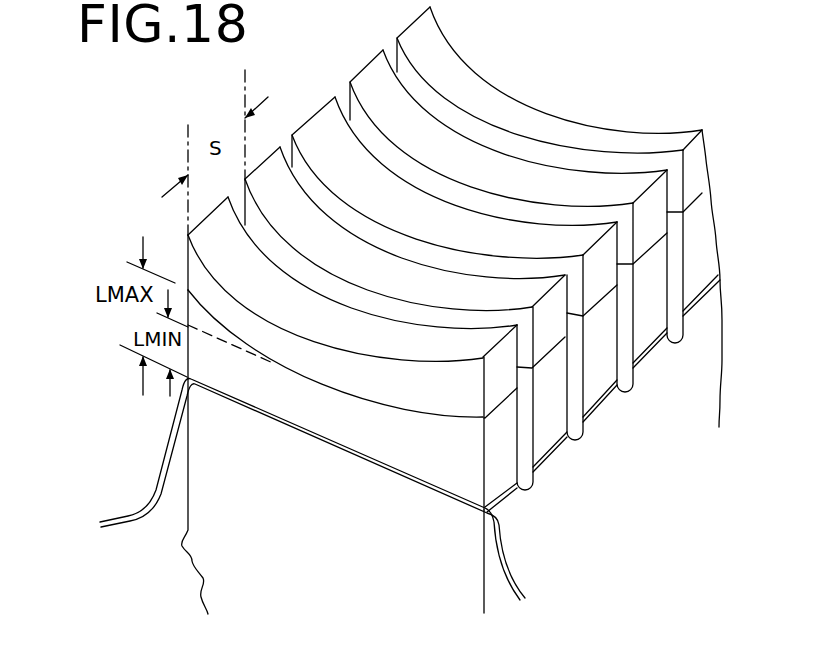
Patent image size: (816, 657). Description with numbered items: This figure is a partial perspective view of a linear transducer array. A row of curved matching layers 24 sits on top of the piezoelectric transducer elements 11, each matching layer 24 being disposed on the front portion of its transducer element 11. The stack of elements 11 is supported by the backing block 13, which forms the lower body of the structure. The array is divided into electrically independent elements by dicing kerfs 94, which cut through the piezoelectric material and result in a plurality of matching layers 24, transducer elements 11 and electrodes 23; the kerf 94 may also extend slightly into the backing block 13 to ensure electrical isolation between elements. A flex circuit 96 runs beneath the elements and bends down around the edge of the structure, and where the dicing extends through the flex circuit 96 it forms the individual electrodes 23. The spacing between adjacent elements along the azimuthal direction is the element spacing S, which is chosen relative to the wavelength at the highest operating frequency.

The matching layer 24 is at (518, 112).
The transducer element 11 is at (452, 458).
The backing block 13 is at (381, 526).
The electrode 23 is at (557, 441).
The kerf 94 is at (527, 478).
The flex circuit 96 is at (512, 580).